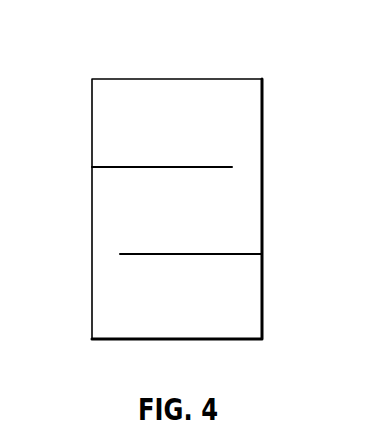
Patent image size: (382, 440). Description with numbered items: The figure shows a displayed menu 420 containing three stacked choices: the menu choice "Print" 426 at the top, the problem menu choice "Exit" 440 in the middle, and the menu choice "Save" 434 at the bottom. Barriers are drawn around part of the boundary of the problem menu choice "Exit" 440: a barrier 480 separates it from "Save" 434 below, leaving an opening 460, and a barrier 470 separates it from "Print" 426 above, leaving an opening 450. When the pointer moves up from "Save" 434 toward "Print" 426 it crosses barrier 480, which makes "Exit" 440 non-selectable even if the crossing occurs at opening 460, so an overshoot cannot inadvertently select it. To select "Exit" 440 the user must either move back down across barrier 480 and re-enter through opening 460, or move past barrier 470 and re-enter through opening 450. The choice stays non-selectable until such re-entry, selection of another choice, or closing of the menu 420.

The menu 420 is at (181, 79).
The menu choice "Print" 426 is at (227, 122).
The problem menu choice "Exit" 440 is at (228, 206).
The menu choice "Save" 434 is at (252, 292).
The opening 450 is at (235, 165).
The opening 460 is at (117, 256).
The barrier 470 is at (117, 167).
The barrier 480 is at (101, 254).